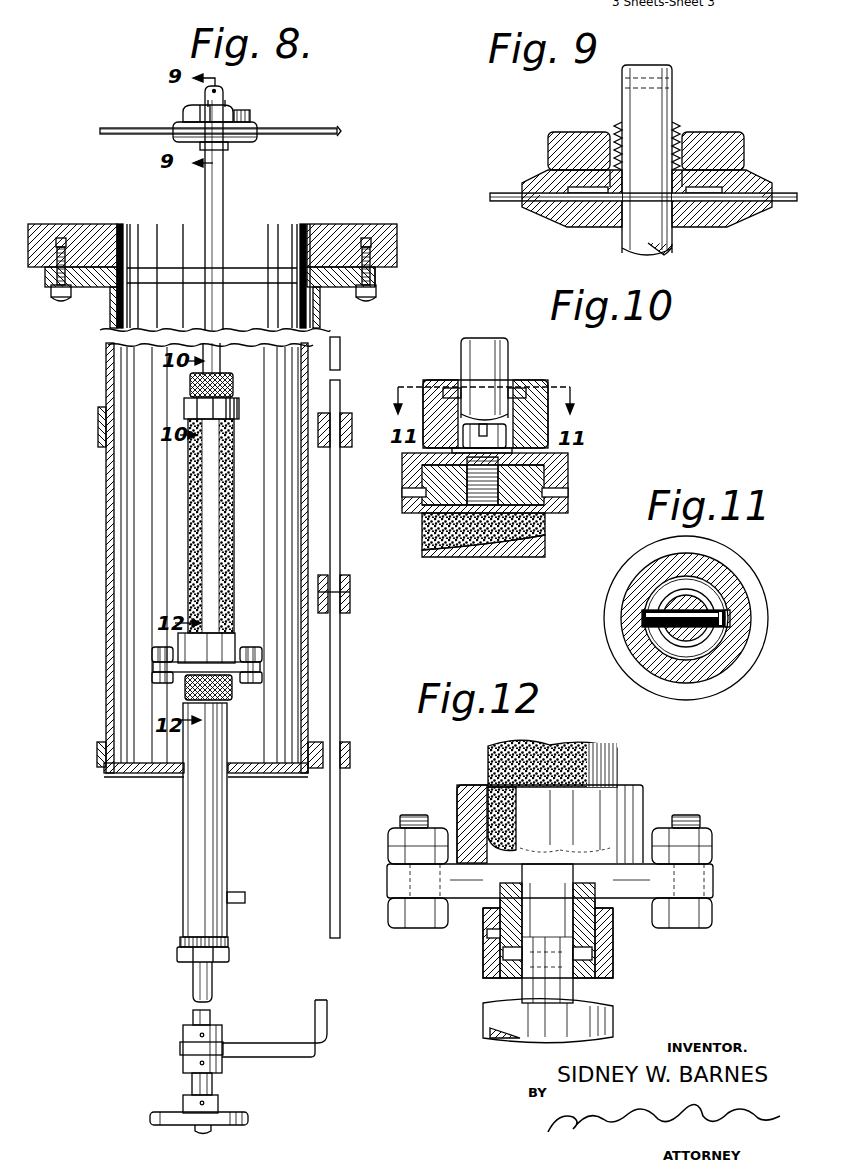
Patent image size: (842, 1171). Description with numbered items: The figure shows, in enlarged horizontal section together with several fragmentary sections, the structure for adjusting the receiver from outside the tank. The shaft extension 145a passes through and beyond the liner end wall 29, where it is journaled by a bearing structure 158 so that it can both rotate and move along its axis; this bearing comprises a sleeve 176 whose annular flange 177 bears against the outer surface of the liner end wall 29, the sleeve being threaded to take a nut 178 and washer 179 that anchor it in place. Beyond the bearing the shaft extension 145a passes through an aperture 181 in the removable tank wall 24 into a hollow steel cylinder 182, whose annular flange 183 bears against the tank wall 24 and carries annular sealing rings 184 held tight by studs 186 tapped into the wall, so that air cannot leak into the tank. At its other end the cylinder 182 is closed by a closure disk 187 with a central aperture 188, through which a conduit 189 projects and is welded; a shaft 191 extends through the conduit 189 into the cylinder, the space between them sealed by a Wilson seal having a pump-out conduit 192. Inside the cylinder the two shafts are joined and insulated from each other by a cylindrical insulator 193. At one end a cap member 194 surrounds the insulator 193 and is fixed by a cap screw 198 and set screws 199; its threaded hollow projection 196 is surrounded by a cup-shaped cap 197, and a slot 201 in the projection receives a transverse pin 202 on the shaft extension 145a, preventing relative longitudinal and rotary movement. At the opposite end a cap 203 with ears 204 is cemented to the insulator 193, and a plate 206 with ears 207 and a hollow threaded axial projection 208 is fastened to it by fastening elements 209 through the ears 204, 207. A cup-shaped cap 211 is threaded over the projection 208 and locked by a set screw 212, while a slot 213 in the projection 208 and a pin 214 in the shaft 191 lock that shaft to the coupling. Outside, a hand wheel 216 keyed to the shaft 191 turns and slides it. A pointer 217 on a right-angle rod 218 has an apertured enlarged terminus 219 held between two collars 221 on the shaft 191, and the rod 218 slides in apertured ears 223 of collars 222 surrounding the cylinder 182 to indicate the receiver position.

In FIG. 8, the removable tank wall 24 is at (381, 226).
In FIG. 8, the liner end wall 29 is at (316, 128).
In FIG. 9, the liner end wall 29 is at (502, 193).
In FIG. 8, the shaft extension 145a is at (205, 212).
In FIG. 9, the shaft extension 145a is at (673, 92).
In FIG. 10, the shaft extension 145a is at (484, 352).
In FIG. 11, the shaft extension 145a is at (700, 637).
In FIG. 8, the bearing structure 158 is at (254, 143).
In FIG. 9, the bearing structure 158 is at (612, 230).
In FIG. 8, the sleeve 176 is at (205, 104).
In FIG. 9, the sleeve 176 is at (616, 124).
In FIG. 8, the annular flange 177 is at (237, 144).
In FIG. 9, the annular flange 177 is at (548, 214).
In FIG. 8, the nut 178 is at (262, 103).
In FIG. 9, the nut 178 is at (736, 105).
In FIG. 8, the washer 179 is at (183, 118).
In FIG. 9, the washer 179 is at (548, 170).
In FIG. 8, the aperture 181 is at (300, 248).
In FIG. 8, the hollow steel cylinder 182 is at (106, 599).
In FIG. 8, the annular flange 183 is at (380, 282).
In FIG. 8, the annular sealing rings 184 is at (90, 265).
In FIG. 8, the studs 186 is at (67, 302).
In FIG. 8, the closure disk 187 is at (252, 777).
In FIG. 8, the central aperture 188 is at (181, 785).
In FIG. 8, the conduit 189 is at (183, 863).
In FIG. 12, the conduit 189 is at (500, 1040).
In FIG. 8, the shaft 191 is at (193, 983).
In FIG. 12, the shaft 191 is at (530, 1010).
In FIG. 8, the pump-out conduit 192 is at (240, 892).
In FIG. 8, the cylindrical insulator 193 is at (234, 500).
In FIG. 10, the cylindrical insulator 193 is at (452, 545).
In FIG. 12, the cylindrical insulator 193 is at (488, 762).
In FIG. 8, the cap member 194 is at (233, 422).
In FIG. 10, the cap member 194 is at (568, 472).
In FIG. 11, the cap member 194 is at (622, 578).
In FIG. 10, the threaded hollow projection 196 is at (554, 400).
In FIG. 11, the threaded hollow projection 196 is at (688, 658).
In FIG. 8, the cup-shaped cap 197 is at (233, 381).
In FIG. 10, the cup-shaped cap 197 is at (545, 412).
In FIG. 11, the cup-shaped cap 197 is at (641, 606).
In FIG. 10, the cap screw 198 is at (566, 453).
In FIG. 10, the set screws 199 is at (405, 500).
In FIG. 10, the slot 201 is at (503, 388).
In FIG. 11, the slot 201 is at (638, 617).
In FIG. 10, the transverse pin 202 is at (450, 388).
In FIG. 11, the transverse pin 202 is at (727, 607).
In FIG. 8, the cap 203 is at (226, 645).
In FIG. 12, the cap 203 is at (628, 792).
In FIG. 8, the ears 204 is at (266, 655).
In FIG. 12, the ears 204 is at (396, 863).
In FIG. 8, the plate 206 is at (228, 673).
In FIG. 12, the plate 206 is at (623, 900).
In FIG. 8, the ears 207 is at (152, 668).
In FIG. 12, the ears 207 is at (396, 897).
In FIG. 12, the hollow threaded axial projection 208 is at (616, 950).
In FIG. 8, the fastening elements 209 is at (152, 678).
In FIG. 12, the fastening elements 209 is at (418, 815).
In FIG. 8, the cup-shaped cap 211 is at (233, 703).
In FIG. 12, the cup-shaped cap 211 is at (522, 990).
In FIG. 12, the set screw 212 is at (488, 934).
In FIG. 12, the slot 213 is at (616, 972).
In FIG. 12, the pin 214 is at (510, 962).
In FIG. 8, the hand wheel 216 is at (230, 1110).
In FIG. 8, the pointer 217 is at (352, 599).
In FIG. 8, the rod 218 is at (342, 646).
In FIG. 8, the apertured enlarged terminus 219 is at (180, 1048).
In FIG. 8, the collars 221 is at (220, 1028).
In FIG. 8, the collars 222 is at (98, 428).
In FIG. 8, the ears 223 is at (346, 449).